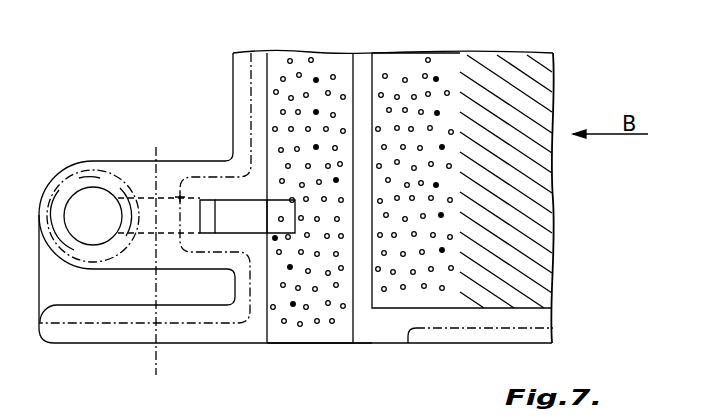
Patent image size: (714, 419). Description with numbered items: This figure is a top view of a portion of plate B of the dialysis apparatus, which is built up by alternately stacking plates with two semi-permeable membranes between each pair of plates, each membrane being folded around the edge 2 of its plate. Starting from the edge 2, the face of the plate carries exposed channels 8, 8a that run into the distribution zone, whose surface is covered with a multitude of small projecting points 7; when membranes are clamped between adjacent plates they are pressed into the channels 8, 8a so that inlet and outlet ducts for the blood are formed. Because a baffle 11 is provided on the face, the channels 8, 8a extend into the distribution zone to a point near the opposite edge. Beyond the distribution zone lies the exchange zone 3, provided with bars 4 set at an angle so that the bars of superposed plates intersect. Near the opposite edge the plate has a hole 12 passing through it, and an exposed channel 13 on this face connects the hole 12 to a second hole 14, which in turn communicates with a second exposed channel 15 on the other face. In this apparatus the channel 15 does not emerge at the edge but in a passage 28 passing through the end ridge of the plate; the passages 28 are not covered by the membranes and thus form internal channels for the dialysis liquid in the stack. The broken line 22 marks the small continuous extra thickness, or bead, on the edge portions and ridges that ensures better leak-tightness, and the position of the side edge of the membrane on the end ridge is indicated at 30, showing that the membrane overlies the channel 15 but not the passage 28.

The edge 2 is at (465, 335).
The exchange zone 3 is at (508, 72).
The bars 4 is at (482, 63).
The projecting points 7 is at (387, 88).
The exposed channel 8 is at (298, 333).
The exposed channel 8a is at (331, 344).
The baffle 11 is at (366, 297).
The hole 12 is at (285, 208).
The exposed channel 13 is at (230, 207).
The second hole 14 is at (208, 203).
The second exposed channel 15 is at (143, 205).
The broken line 22 is at (103, 255).
The passage 28 is at (80, 197).
The position of membrane side edge 30 is at (157, 352).